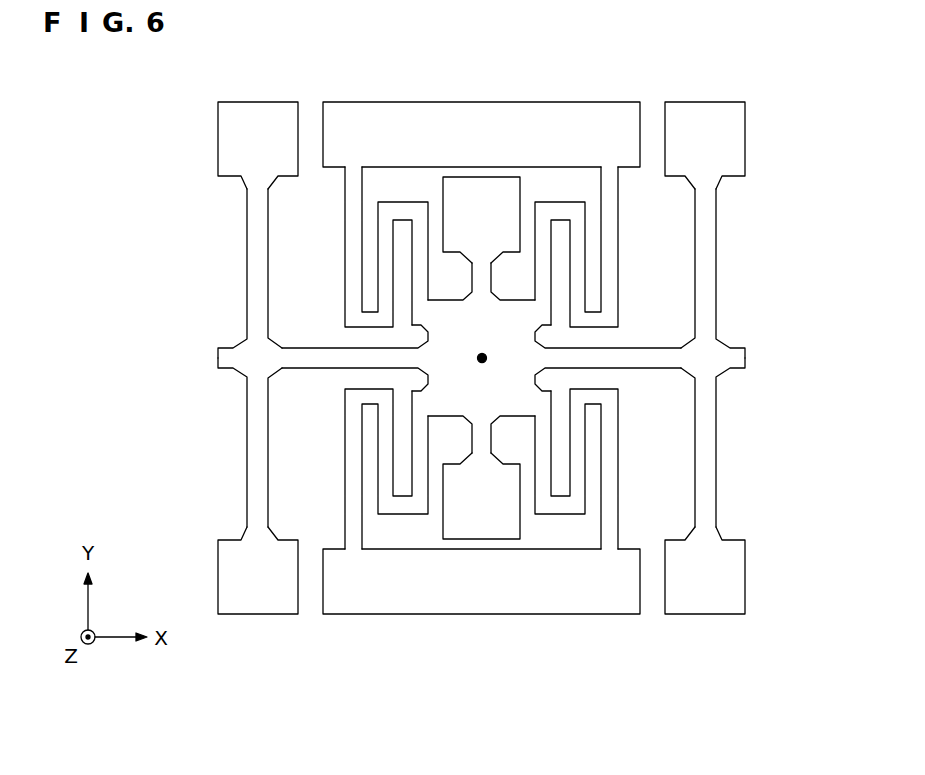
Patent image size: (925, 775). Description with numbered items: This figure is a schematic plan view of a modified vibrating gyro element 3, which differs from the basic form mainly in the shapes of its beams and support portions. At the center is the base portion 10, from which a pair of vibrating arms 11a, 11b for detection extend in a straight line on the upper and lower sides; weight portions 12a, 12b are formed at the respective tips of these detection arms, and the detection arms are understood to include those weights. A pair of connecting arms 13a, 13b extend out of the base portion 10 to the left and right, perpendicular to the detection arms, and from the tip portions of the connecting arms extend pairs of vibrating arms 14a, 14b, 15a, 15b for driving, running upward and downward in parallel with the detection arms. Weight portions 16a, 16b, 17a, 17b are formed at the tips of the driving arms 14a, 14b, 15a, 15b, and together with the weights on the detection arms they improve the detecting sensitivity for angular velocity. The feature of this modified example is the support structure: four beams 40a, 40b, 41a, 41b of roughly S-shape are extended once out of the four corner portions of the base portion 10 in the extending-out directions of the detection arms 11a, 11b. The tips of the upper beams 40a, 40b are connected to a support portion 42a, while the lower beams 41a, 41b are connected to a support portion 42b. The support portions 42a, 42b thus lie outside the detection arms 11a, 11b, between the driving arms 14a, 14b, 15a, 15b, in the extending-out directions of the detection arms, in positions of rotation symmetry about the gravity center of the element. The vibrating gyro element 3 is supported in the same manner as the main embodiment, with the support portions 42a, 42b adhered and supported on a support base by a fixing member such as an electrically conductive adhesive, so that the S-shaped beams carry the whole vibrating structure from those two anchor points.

The vibrating gyro element 3 is at (775, 106).
The base portion 10 is at (527, 372).
The vibrating arm for detection 11a is at (485, 271).
The vibrating arm for detection 11b is at (484, 444).
The weight portion 12a is at (510, 230).
The weight portion 12b is at (508, 484).
The connecting arm 13a is at (301, 357).
The connecting arm 13b is at (661, 357).
The vibrating arm for driving 14a is at (247, 263).
The vibrating arm for driving 14b is at (247, 453).
The vibrating arm for driving 15a is at (717, 263).
The vibrating arm for driving 15b is at (717, 453).
The weight portion 16a is at (219, 142).
The weight portion 16b is at (219, 578).
The weight portion 17a is at (744, 137).
The weight portion 17b is at (744, 576).
The beam 40a is at (345, 196).
The beam 40b is at (618, 196).
The beam 41a is at (345, 518).
The beam 41b is at (618, 518).
The support portion 42a is at (486, 100).
The support portion 42b is at (486, 616).